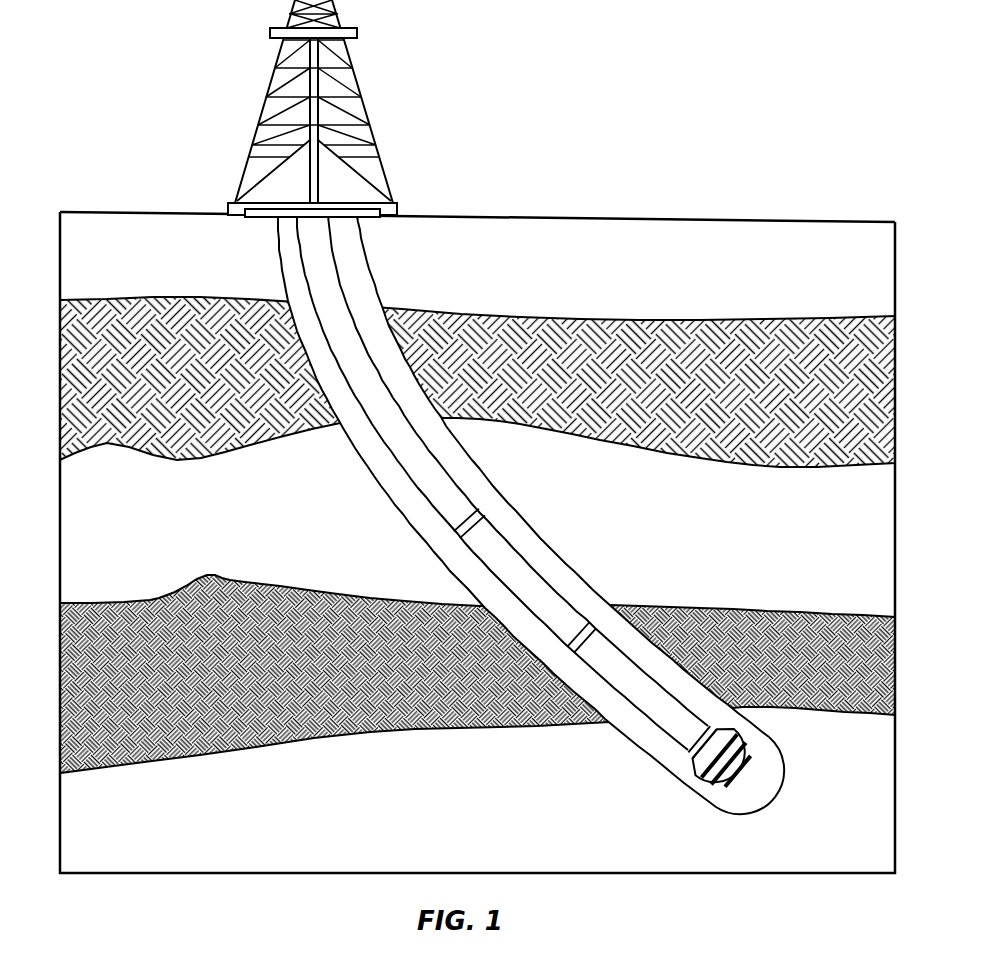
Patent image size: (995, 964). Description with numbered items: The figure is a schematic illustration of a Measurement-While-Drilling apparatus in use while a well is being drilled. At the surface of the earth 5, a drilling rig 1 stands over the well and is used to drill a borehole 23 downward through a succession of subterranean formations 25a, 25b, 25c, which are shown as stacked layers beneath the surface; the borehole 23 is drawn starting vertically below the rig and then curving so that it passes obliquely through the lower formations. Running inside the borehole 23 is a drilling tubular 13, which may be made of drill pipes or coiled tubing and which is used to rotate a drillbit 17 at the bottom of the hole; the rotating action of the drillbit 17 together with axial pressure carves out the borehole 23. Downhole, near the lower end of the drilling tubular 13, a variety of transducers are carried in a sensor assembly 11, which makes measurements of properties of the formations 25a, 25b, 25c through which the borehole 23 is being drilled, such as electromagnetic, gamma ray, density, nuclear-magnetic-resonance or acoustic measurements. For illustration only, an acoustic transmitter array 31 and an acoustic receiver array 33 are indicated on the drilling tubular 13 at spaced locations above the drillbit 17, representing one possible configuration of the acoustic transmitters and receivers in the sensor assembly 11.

The drilling rig 1 is at (357, 87).
The surface of the earth 5 is at (703, 222).
The sensor assembly 11 is at (586, 545).
The drilling tubular 13 is at (418, 435).
The drillbit 17 is at (763, 753).
The borehole 23 is at (373, 287).
The subterranean formation 25a is at (158, 381).
The subterranean formation 25b is at (158, 532).
The subterranean formation 25c is at (158, 672).
The acoustic transmitter array 31 is at (578, 641).
The acoustic receiver array 33 is at (468, 531).